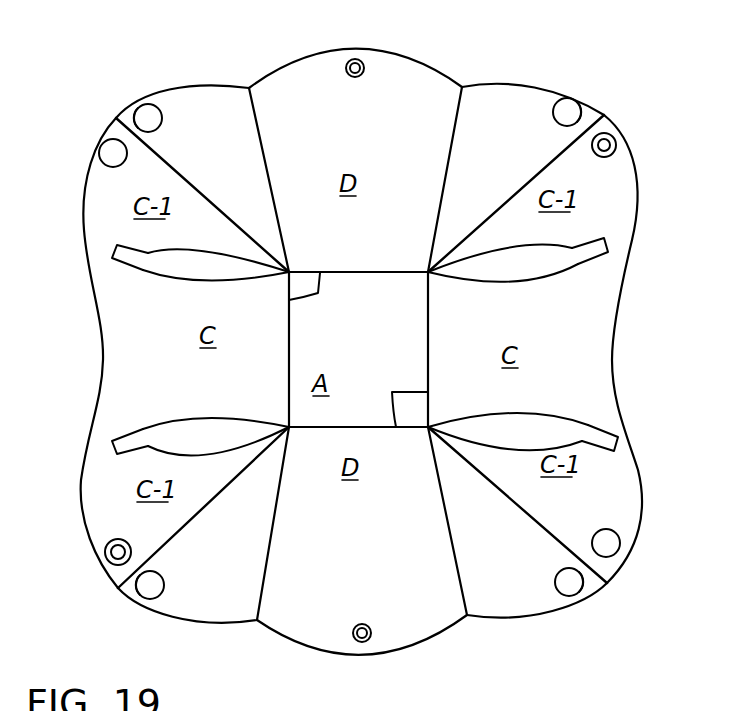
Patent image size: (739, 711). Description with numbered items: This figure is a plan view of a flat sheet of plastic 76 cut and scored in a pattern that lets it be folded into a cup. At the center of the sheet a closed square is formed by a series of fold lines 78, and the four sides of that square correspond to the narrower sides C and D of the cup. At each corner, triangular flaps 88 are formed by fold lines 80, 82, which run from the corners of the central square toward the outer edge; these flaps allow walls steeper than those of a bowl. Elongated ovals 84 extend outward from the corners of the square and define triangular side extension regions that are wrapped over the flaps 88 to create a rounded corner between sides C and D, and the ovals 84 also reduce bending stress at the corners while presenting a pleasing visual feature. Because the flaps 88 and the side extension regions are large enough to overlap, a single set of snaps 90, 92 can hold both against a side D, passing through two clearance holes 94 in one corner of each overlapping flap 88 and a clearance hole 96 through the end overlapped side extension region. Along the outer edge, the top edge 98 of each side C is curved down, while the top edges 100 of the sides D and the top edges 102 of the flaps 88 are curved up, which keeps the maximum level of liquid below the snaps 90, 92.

The flat sheet of plastic 76 is at (636, 177).
The fold lines 78 is at (320, 295).
The fold line 80 is at (170, 166).
The fold line 82 is at (248, 118).
The elongated ovals 84 is at (115, 246).
The triangular flaps 88 is at (198, 98).
The snap 90 is at (606, 132).
The snap 92 is at (374, 52).
The clearance holes 94 is at (100, 143).
The clearance hole 96 is at (117, 117).
The top edge of side C 98 is at (617, 300).
The top edge of side D 100 is at (323, 27).
The top edge of flap 102 is at (86, 538).